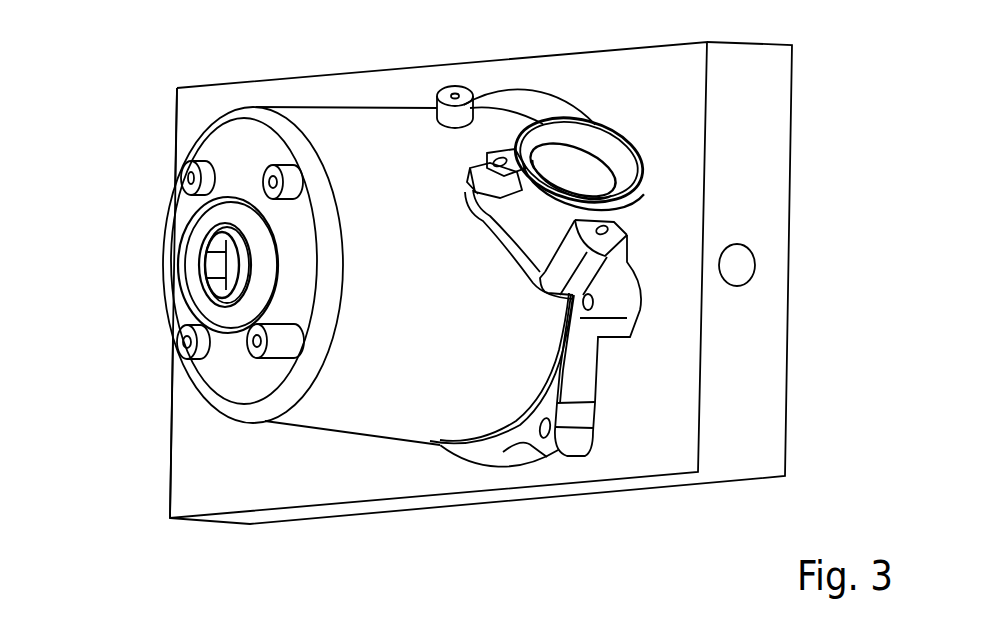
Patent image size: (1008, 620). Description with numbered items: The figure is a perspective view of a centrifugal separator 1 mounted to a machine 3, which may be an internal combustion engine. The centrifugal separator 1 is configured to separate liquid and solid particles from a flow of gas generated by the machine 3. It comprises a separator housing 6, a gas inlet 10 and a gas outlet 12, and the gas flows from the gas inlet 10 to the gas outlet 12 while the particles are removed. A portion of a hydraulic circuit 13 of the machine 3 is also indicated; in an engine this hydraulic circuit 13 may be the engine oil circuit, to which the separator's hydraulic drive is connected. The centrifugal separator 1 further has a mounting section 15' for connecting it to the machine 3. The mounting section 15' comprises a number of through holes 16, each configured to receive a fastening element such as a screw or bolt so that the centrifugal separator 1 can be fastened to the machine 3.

The centrifugal separator 1 is at (291, 54).
The machine 3 is at (755, 92).
The separator housing 6 is at (390, 412).
The gas inlet 10 is at (190, 263).
The gas outlet 12 is at (593, 145).
The hydraulic circuit 13 is at (745, 268).
The mounting section 15' is at (582, 350).
The through holes 16 is at (537, 450).